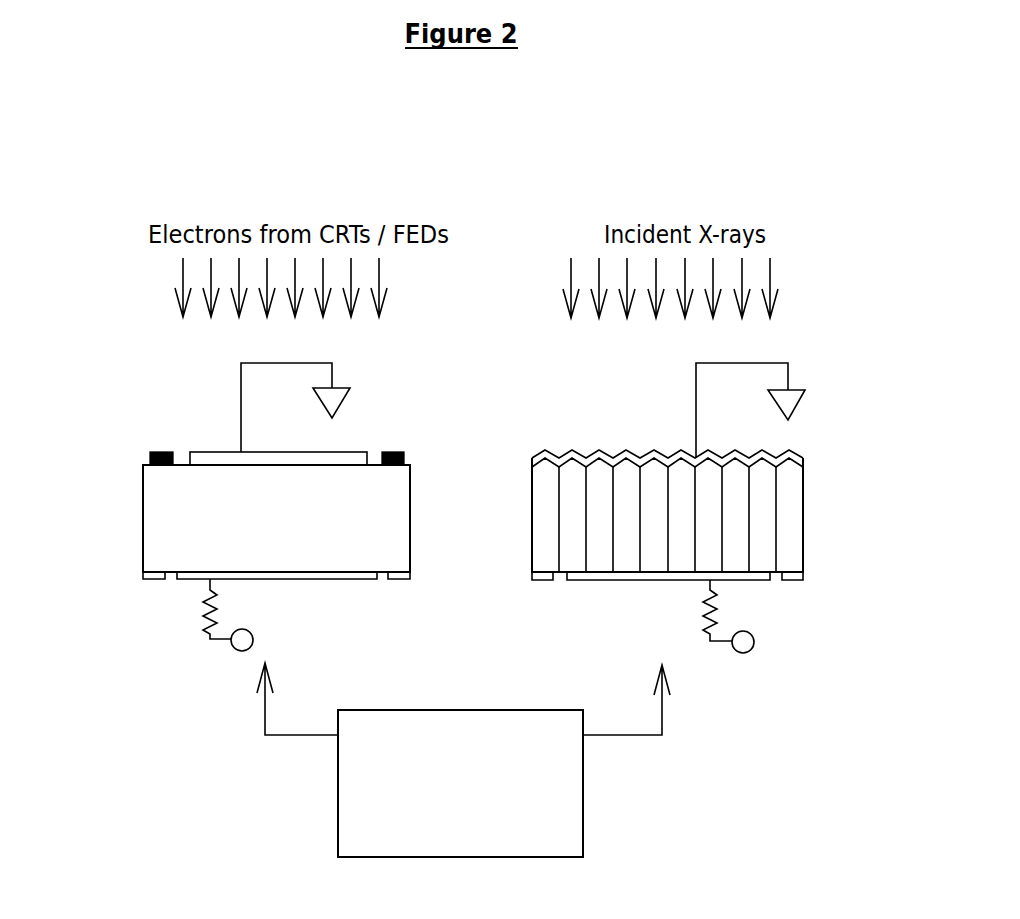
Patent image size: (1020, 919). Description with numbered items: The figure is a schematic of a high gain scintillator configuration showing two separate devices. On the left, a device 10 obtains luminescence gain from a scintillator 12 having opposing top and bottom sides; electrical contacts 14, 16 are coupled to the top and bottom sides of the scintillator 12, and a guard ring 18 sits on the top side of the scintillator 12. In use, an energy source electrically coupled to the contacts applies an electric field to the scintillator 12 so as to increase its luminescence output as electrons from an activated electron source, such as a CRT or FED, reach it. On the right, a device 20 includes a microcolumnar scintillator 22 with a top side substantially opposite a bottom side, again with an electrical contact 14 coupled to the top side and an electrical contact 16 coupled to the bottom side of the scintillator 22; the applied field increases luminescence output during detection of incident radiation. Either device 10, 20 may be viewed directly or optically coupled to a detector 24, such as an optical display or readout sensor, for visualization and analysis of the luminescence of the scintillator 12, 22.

The device 10 is at (122, 623).
The scintillator 12 is at (143, 520).
The top electrical contact 14 is at (586, 452).
The bottom electrical contact 16 is at (312, 581).
The guard ring 18 is at (157, 448).
The device 20 is at (818, 608).
The scintillator 22 is at (805, 512).
The detector 24 is at (463, 760).